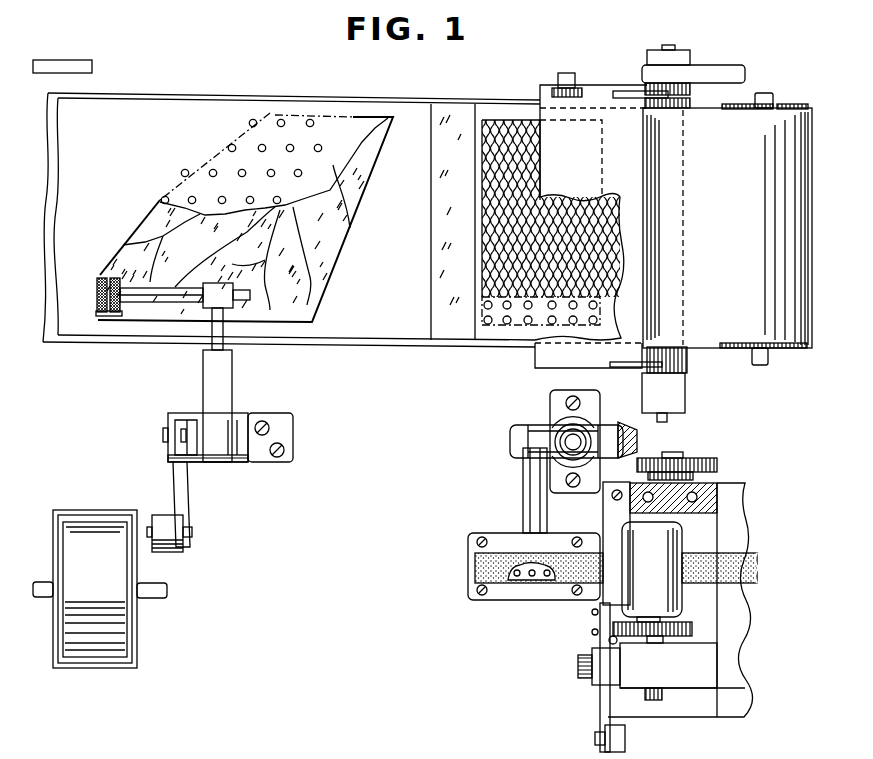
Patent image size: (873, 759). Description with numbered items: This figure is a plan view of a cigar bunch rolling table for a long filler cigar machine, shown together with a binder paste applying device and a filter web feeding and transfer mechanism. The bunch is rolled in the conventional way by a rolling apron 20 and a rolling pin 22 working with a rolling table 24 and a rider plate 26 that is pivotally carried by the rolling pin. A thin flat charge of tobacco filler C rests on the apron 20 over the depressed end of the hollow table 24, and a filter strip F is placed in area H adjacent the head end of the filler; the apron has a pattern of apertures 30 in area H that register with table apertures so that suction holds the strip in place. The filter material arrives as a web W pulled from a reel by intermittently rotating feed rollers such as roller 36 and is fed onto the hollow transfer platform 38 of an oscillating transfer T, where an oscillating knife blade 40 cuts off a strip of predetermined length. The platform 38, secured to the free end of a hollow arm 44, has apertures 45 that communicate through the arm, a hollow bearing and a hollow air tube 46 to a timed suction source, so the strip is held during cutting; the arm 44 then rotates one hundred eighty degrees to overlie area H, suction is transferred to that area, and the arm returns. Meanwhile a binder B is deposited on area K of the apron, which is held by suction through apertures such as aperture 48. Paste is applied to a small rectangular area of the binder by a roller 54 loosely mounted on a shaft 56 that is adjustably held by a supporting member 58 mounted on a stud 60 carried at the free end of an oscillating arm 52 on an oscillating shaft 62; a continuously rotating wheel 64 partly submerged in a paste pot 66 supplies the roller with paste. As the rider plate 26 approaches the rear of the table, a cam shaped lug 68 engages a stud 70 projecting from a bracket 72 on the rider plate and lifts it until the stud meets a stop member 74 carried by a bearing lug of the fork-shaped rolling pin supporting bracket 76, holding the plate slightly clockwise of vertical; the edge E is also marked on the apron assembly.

The rolling apron 20 is at (390, 334).
The rolling pin 22 is at (683, 187).
The rolling table 24 is at (446, 339).
The rider plate 26 is at (610, 63).
The apertures 30 is at (527, 324).
The feed roller 36 is at (683, 612).
The hollow transfer platform 38 is at (510, 537).
The oscillating knife blade 40 is at (603, 527).
The hollow arm 44 is at (530, 478).
The apertures 45 is at (535, 577).
The hollow air tube 46 is at (553, 423).
The aperture 48 is at (186, 170).
The oscillating arm 52 is at (197, 462).
The paste applying roller 54 is at (98, 280).
The shaft 56 is at (187, 301).
The supporting member 58 is at (226, 388).
The stud 60 is at (249, 462).
The oscillating shaft 62 is at (163, 437).
The wheel 64 is at (120, 638).
The paste pot 66 is at (118, 668).
The cam shaped lug 68 is at (91, 62).
The stud 70 is at (568, 72).
The bracket 72 is at (560, 87).
The stop member 74 is at (730, 70).
The rolling pin supporting bracket 76 is at (690, 52).
The binder B is at (318, 296).
The tobacco filler charge C is at (518, 120).
The edge clamp E is at (97, 316).
The filter strip F is at (475, 567).
The area H is at (493, 327).
The area K is at (275, 115).
The oscillating transfer T is at (517, 498).
The filter material web W is at (757, 587).